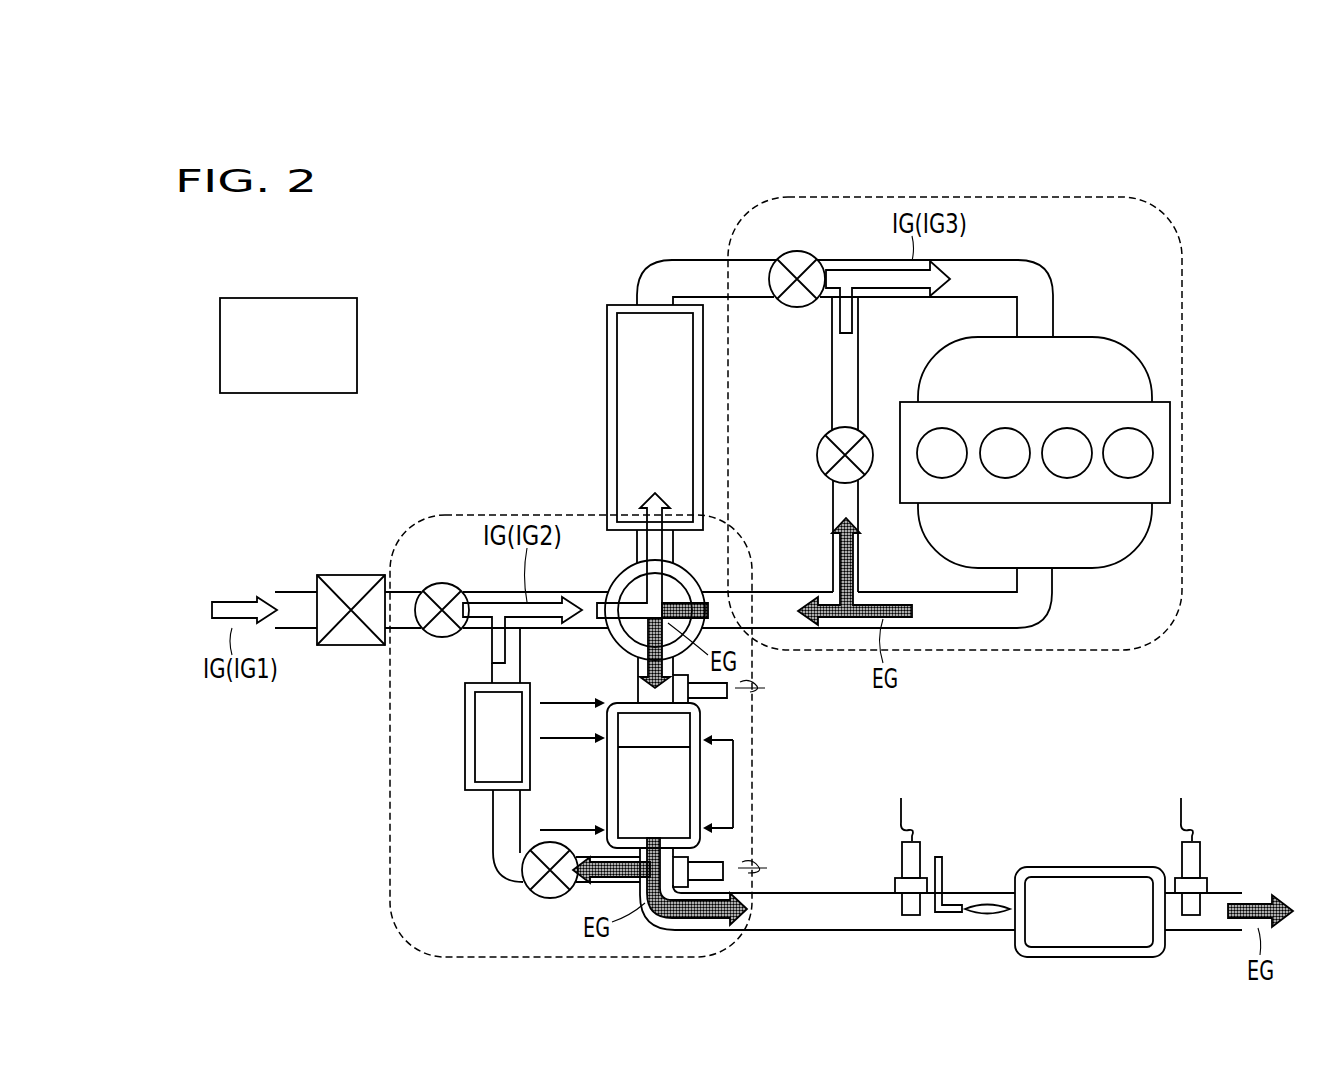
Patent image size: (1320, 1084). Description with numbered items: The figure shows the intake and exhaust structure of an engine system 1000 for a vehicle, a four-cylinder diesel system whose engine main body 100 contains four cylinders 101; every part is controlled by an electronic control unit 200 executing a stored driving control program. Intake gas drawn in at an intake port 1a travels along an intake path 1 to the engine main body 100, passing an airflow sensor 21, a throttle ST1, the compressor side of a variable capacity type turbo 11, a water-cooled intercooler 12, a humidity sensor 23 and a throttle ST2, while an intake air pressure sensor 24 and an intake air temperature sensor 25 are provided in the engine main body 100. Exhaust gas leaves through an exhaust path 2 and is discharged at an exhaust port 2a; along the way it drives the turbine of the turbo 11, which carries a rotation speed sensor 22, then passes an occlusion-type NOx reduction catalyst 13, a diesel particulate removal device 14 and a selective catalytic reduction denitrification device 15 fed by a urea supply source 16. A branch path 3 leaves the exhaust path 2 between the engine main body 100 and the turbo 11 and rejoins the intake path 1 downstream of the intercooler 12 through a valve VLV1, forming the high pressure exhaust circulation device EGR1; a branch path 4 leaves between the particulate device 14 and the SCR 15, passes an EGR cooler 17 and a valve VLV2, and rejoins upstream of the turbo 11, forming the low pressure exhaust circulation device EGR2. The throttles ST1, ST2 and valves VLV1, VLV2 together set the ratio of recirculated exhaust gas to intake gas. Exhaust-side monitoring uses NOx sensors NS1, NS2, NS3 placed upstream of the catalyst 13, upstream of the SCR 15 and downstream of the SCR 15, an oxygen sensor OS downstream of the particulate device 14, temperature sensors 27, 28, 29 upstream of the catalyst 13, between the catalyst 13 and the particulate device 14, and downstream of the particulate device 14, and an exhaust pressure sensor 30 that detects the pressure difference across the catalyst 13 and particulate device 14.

The engine system 1000 is at (426, 228).
The electronic control unit 200 is at (285, 394).
The intake path 1 is at (300, 590).
The intake port 1a is at (268, 580).
The airflow sensor 21 is at (355, 574).
The throttle ST1 is at (441, 582).
The variable capacity type turbo 11 is at (616, 583).
The rotation speed sensor 22 is at (696, 569).
The water-cooled intercooler 12 is at (607, 405).
The humidity sensor 23 is at (638, 266).
The throttle ST2 is at (798, 251).
The intake air pressure sensor 24 is at (1083, 332).
The intake air temperature sensor 25 is at (1146, 367).
The engine main body 100 is at (1152, 513).
The cylinders 101 is at (1120, 438).
The exhaust path 2 is at (982, 630).
The exhaust port 2a is at (1250, 893).
The branch path 3 is at (831, 498).
The valve VLV1 is at (821, 442).
The branch path 4 is at (490, 830).
The EGR cooler 17 is at (465, 745).
The valve VLV2 is at (538, 896).
The occlusion-type NOx reduction catalyst 13 is at (697, 722).
The diesel particulate removal device 14 is at (630, 792).
The temperature sensor 27 is at (561, 700).
The temperature sensor 28 is at (560, 741).
The temperature sensor 29 is at (548, 828).
The exhaust pressure sensor 30 is at (735, 779).
The NOx sensor NS1 is at (727, 698).
The oxygen sensor OS is at (742, 860).
The selective catalytic reduction denitrification device 15 is at (1087, 866).
The urea supply source 16 is at (945, 870).
The NOx sensor NS2 is at (897, 868).
The NOx sensor NS3 is at (1200, 862).
The high pressure exhaust circulation device EGR1 is at (1013, 197).
The low pressure exhaust circulation device EGR2 is at (390, 870).